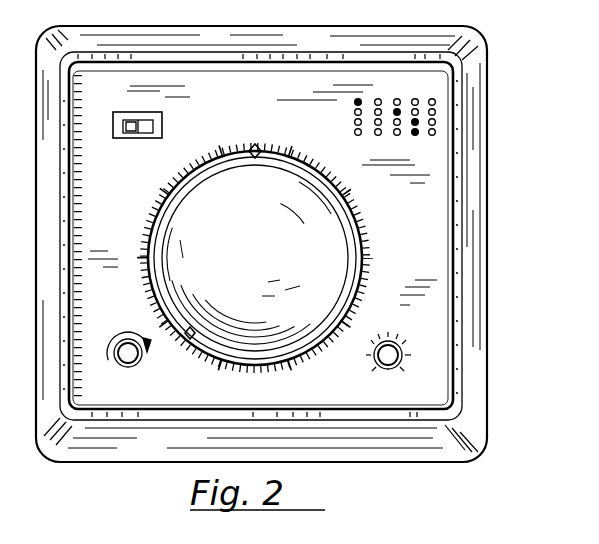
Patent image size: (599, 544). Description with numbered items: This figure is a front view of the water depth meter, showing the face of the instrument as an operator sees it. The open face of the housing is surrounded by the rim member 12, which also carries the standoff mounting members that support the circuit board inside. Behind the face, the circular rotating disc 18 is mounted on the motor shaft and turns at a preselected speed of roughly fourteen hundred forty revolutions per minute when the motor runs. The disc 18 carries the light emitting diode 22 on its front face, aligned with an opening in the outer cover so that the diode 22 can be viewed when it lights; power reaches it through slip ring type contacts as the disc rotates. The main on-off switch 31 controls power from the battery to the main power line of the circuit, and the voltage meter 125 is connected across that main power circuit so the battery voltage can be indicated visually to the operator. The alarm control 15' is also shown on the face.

The rim member 12 is at (478, 303).
The alarm control knob 15' is at (436, 361).
The rotating disc 18 is at (174, 171).
The light emitting diode 22 is at (258, 146).
The main on-off switch 31 is at (123, 337).
The voltage meter 125 is at (130, 118).